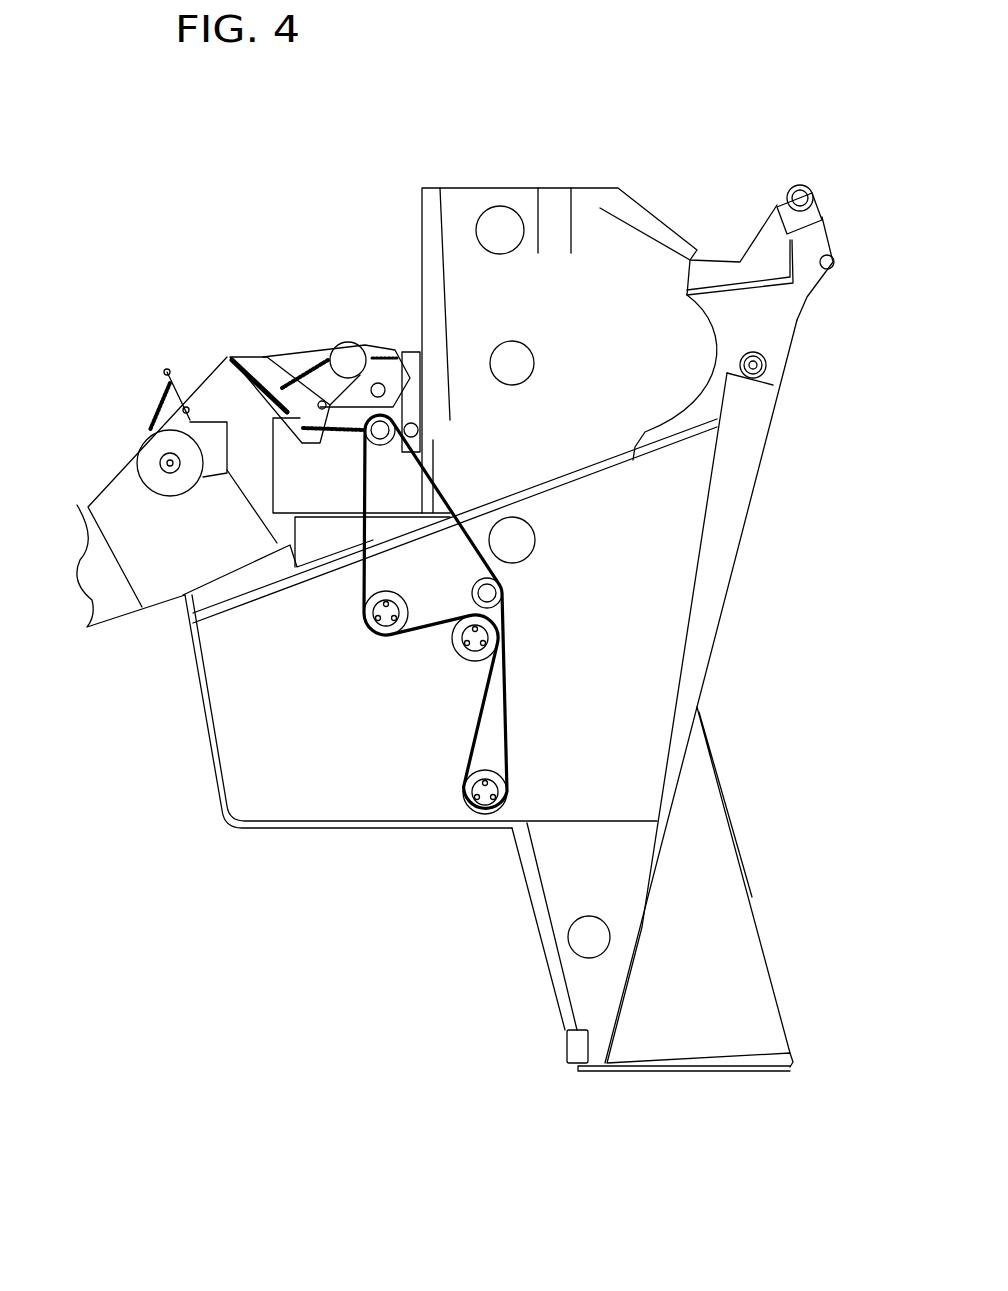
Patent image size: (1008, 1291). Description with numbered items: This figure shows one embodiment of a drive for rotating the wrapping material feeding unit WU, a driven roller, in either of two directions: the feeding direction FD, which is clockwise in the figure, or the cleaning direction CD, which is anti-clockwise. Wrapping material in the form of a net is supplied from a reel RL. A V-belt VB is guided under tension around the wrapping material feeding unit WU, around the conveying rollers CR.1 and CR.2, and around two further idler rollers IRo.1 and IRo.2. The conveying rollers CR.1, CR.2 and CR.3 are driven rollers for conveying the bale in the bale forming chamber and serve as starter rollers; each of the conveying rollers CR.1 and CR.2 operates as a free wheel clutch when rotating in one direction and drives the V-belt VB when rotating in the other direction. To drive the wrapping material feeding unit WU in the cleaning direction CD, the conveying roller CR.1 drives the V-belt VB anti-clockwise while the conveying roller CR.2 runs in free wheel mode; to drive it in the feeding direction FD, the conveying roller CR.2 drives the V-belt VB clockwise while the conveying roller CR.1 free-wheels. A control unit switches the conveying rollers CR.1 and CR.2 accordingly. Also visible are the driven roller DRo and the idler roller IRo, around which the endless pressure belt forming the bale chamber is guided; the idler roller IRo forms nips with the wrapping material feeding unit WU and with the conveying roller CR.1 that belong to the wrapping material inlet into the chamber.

The idler roller IRo.1 is at (380, 413).
The feeding direction FD is at (393, 586).
The reel RL is at (160, 468).
The driven roller DRo is at (505, 235).
The idler roller IRo is at (512, 537).
The idler roller IRo.2 is at (490, 592).
The V-belt VB is at (508, 683).
The cleaning direction CD is at (365, 630).
The wrapping material feeding unit WU is at (390, 636).
The conveying roller CR.1 is at (457, 657).
The conveying roller CR.2 is at (483, 795).
The conveying roller CR.3 is at (589, 937).